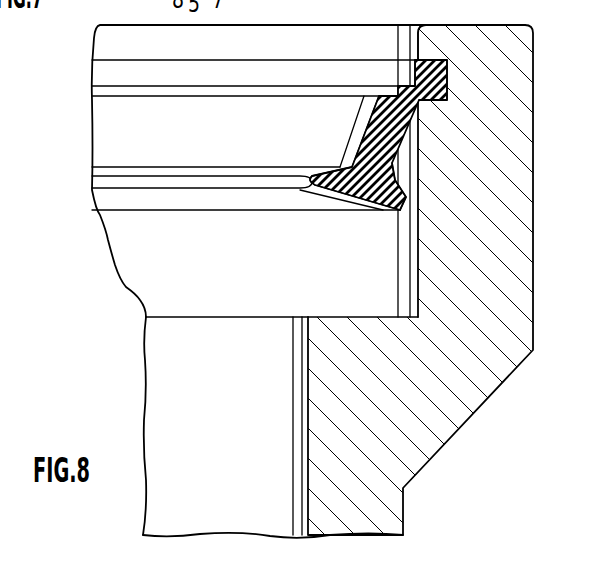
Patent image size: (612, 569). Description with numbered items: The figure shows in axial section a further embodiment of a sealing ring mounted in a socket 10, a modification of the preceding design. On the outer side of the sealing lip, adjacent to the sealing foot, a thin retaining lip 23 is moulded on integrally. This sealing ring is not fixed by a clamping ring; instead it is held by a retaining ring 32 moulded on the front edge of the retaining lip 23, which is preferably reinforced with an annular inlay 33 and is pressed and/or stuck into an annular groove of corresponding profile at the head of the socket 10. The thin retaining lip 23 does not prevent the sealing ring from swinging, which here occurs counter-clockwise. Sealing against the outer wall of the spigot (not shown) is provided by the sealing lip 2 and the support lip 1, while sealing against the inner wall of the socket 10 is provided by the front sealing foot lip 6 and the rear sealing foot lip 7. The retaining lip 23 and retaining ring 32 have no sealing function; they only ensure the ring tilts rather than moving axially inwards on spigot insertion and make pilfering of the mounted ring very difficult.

The support lip 1 is at (260, 145).
The sealing lip 2 is at (305, 194).
The front sealing foot lip 6 is at (410, 187).
The rear sealing foot lip 7 is at (398, 211).
The socket 10 is at (488, 207).
The retaining lip 23 is at (405, 133).
The retaining ring 32 is at (447, 97).
The annular inlay 33 is at (444, 60).